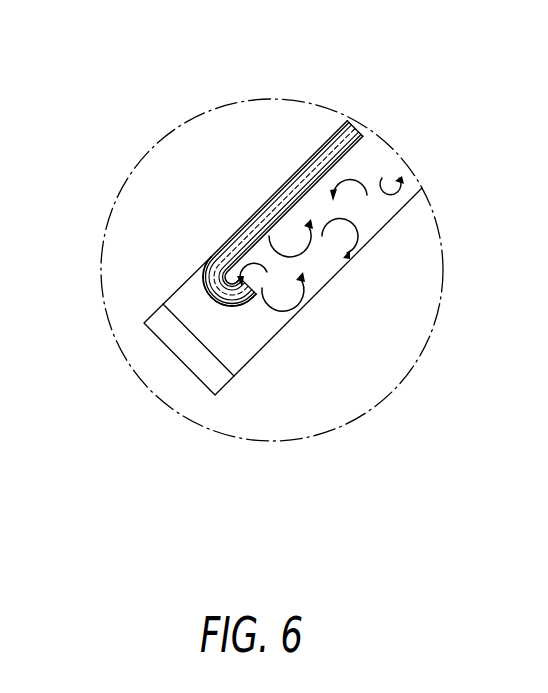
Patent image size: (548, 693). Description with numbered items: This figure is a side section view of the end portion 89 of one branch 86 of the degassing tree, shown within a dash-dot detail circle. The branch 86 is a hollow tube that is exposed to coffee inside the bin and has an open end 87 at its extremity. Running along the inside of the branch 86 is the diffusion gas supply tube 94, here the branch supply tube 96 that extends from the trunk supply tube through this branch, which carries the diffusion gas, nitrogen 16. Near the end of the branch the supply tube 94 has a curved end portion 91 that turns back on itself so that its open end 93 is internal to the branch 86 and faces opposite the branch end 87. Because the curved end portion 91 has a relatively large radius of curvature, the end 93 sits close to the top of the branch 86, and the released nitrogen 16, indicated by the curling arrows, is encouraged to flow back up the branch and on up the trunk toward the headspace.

The nitrogen 16 is at (232, 259).
The branch 86 is at (204, 263).
The end of the branch 87 is at (190, 372).
The end portion of branch 89 is at (235, 233).
The curved end portion 91 is at (212, 298).
The end of the supply tube 93 is at (246, 289).
The diffusion gas supply tube 94 is at (278, 190).
The branch supply tube 96 is at (278, 190).